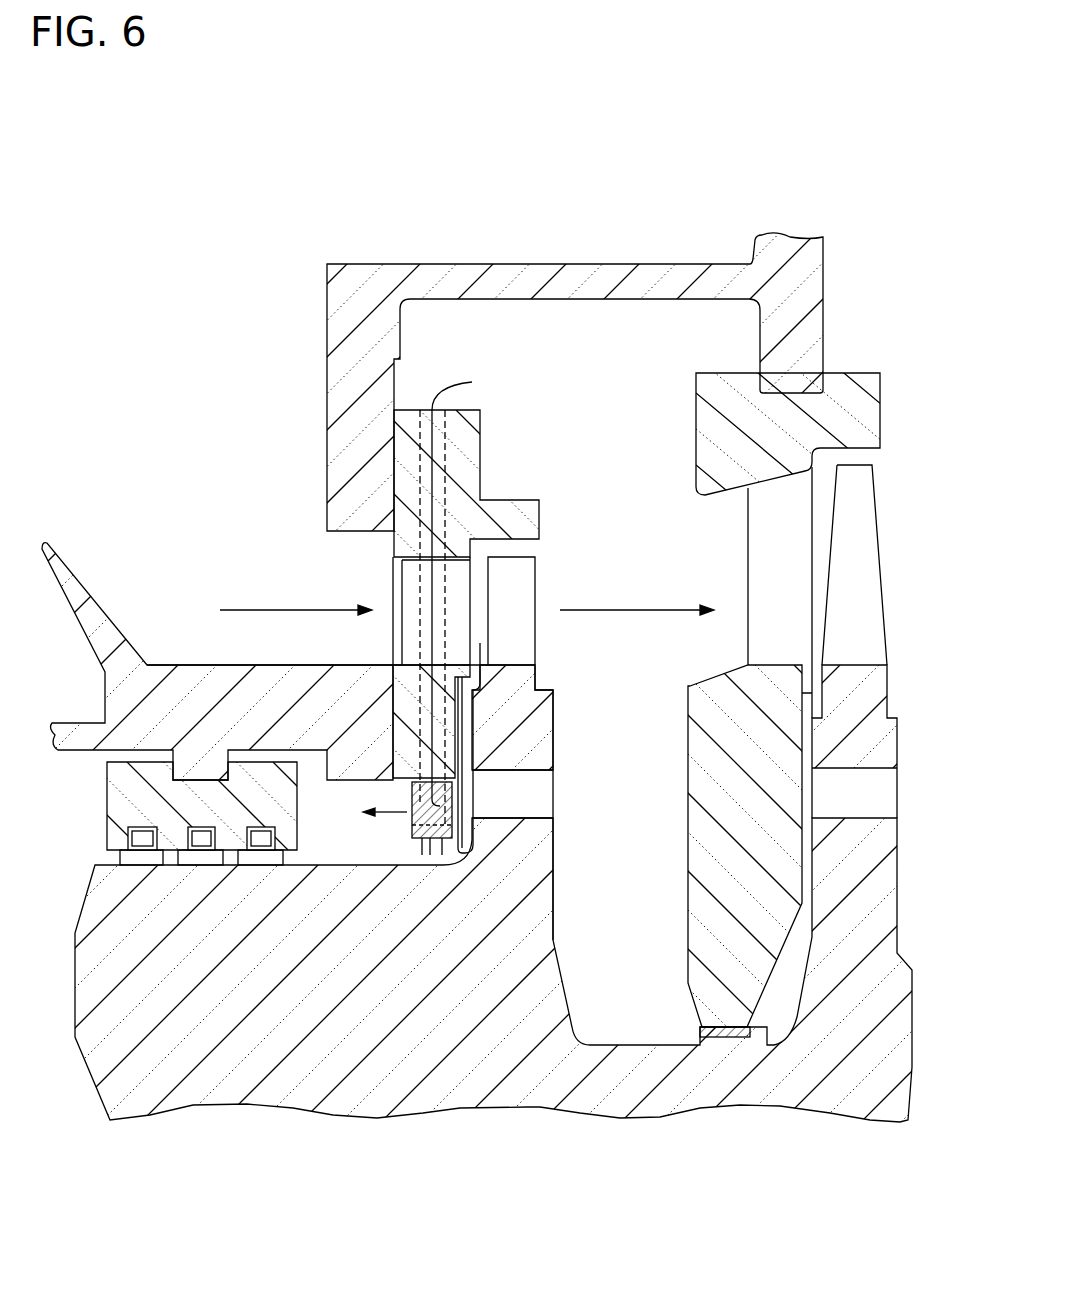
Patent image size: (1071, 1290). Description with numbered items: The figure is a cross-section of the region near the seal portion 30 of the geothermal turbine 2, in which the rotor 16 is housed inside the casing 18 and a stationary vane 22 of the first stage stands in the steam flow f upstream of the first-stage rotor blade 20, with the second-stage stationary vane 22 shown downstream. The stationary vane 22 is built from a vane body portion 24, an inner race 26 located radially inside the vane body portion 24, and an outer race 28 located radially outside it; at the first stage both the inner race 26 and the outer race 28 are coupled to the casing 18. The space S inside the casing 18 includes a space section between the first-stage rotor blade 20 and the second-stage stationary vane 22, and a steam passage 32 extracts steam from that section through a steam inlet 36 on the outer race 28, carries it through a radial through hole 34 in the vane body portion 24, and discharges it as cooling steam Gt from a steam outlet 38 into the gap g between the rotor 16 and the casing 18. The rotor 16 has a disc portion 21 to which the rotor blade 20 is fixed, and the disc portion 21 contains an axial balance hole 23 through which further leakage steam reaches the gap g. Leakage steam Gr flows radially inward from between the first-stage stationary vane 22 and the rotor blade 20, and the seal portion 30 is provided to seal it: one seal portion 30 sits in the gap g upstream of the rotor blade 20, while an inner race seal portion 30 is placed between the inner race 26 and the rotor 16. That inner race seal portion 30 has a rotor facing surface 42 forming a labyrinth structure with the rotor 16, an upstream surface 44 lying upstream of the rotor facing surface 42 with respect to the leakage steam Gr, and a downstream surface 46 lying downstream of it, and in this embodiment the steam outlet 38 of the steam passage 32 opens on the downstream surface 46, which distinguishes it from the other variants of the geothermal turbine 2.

The geothermal turbine 2 is at (692, 176).
The casing 18 is at (544, 264).
The space S is at (620, 340).
The outer race 28 is at (740, 372).
The steam inlet 36 is at (430, 410).
The steam passage 32 is at (447, 456).
The rotor blade 20 is at (875, 572).
The vane body portion 24 is at (748, 545).
The through hole 34 is at (447, 580).
The flow direction f is at (289, 610).
The stationary vane 22 is at (393, 640).
The inner race 26 is at (415, 694).
The downstream surface 46 is at (425, 720).
The disc portion 21 is at (555, 735).
The balance hole 23 is at (555, 772).
The steam outlet 38 is at (412, 800).
The cooling steam Gt is at (407, 818).
The upstream surface 44 is at (452, 802).
The leakage steam Gr is at (456, 848).
The rotor facing surface 42 is at (433, 857).
The rotor 16 is at (898, 955).
The seal portion 30 is at (312, 868).
The gap g is at (338, 862).